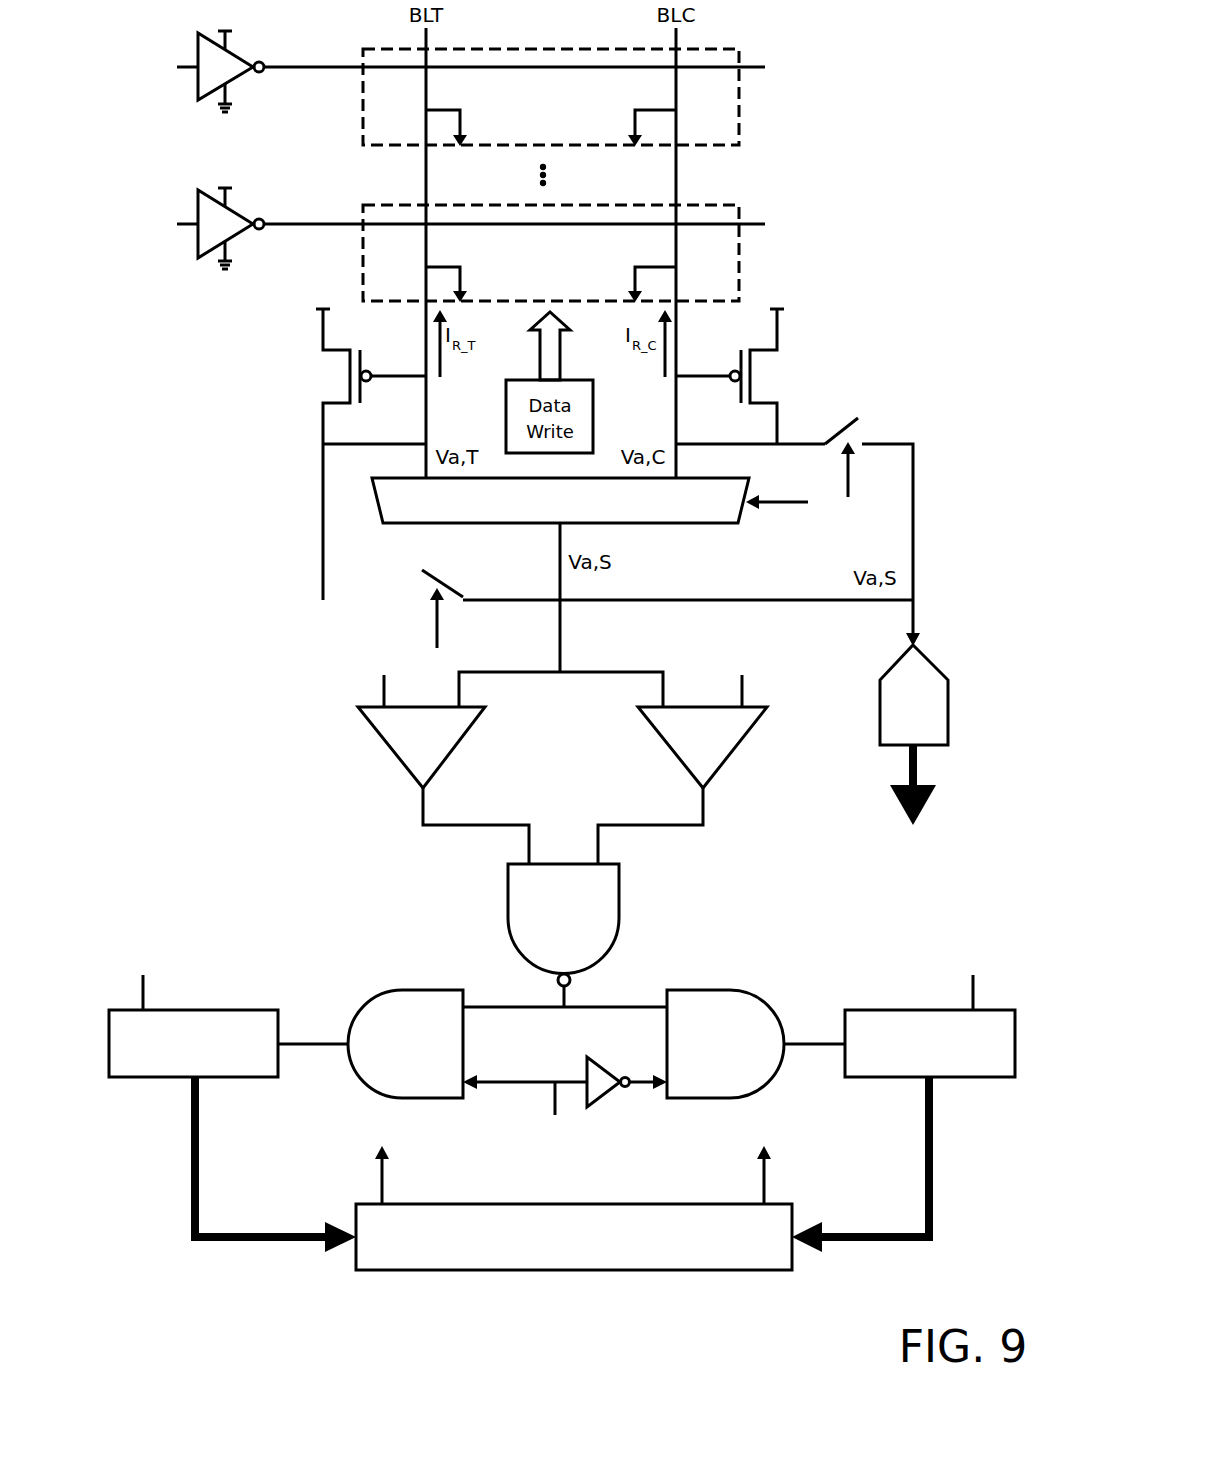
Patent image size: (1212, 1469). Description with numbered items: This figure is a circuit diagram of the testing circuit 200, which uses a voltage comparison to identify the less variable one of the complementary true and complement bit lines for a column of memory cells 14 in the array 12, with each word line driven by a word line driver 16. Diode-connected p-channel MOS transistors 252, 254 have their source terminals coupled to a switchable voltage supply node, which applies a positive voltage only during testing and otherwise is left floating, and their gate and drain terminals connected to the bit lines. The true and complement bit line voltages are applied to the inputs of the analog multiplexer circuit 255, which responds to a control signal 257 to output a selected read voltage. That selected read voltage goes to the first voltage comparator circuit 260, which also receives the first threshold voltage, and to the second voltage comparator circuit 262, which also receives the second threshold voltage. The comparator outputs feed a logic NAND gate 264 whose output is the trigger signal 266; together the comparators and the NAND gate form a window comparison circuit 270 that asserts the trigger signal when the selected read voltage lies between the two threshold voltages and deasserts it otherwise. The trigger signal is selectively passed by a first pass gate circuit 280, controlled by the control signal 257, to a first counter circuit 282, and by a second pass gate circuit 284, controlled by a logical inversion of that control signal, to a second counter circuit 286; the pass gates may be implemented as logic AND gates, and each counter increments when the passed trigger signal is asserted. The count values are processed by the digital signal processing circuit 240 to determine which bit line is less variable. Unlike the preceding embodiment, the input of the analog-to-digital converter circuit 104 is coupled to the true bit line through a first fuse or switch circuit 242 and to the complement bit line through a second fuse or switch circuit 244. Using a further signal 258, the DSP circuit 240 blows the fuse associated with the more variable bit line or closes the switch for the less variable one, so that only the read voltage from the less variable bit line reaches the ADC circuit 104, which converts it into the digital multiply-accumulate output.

The array 12 is at (765, 156).
The memory cells 14 is at (741, 100).
The word line driver 16 is at (190, 85).
The analog-to-digital converter (ADC) circuit 104 is at (877, 690).
The testing circuit 200 is at (250, 698).
The digital signal processing (DSP) circuit 240 is at (620, 1270).
The first fuse (or switch) circuit 242 is at (418, 585).
The second fuse (or switch) circuit 244 is at (876, 418).
The diode-connected p-channel MOS transistor 252 is at (327, 375).
The diode-connected p-channel MOS transistor 254 is at (768, 370).
The analog multiplexer (MUX) circuit 255 is at (372, 500).
The control signal 257 is at (783, 508).
The signal 258 is at (440, 623).
The first voltage comparator circuit 260 is at (385, 742).
The second voltage comparator circuit 262 is at (737, 750).
The logic NAND gate 264 is at (508, 895).
The trigger signal 266 is at (640, 1005).
The window comparison circuit 270 is at (733, 866).
The first pass gate circuit 280 is at (380, 993).
The first counter circuit 282 is at (193, 1008).
The second pass gate circuit 284 is at (750, 990).
The second counter circuit 286 is at (930, 1008).